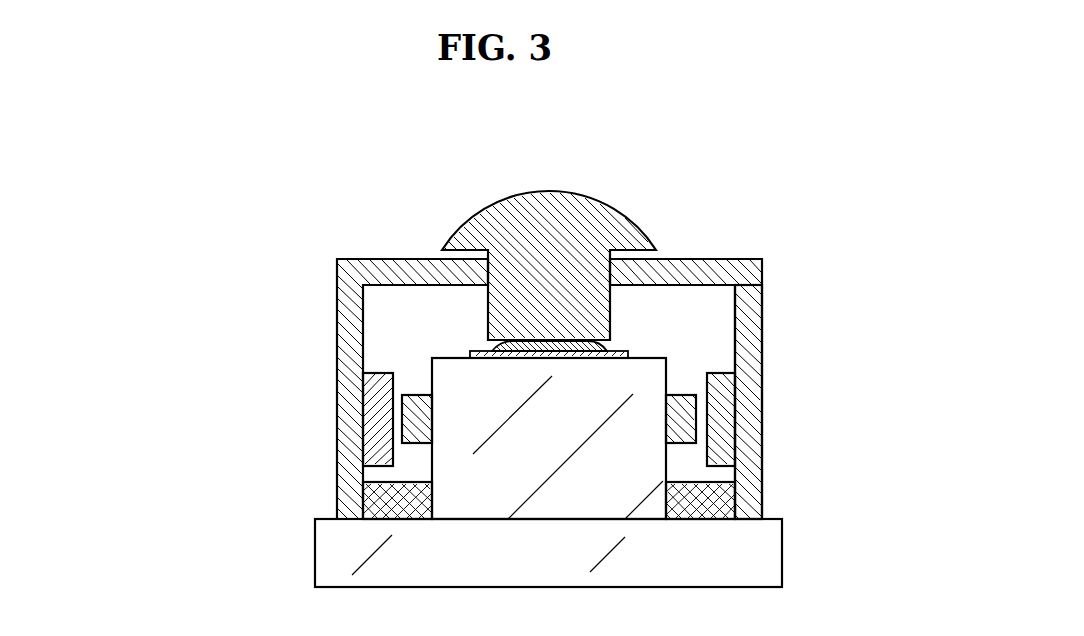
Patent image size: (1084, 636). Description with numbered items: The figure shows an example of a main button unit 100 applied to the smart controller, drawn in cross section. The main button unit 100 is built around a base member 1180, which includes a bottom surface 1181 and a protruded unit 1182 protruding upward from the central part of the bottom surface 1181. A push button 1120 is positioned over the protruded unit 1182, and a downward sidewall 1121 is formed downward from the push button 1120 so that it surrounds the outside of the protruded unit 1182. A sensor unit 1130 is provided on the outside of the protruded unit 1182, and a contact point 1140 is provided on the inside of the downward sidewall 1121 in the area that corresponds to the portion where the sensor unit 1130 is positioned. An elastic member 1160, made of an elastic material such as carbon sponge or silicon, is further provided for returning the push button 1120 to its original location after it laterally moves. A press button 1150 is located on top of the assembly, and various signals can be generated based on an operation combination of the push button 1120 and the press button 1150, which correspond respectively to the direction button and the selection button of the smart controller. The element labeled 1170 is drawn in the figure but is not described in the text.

The main button unit 100 is at (293, 133).
The push button 1120 is at (716, 250).
The downward sidewall 1121 is at (755, 350).
The sensor unit 1130 is at (723, 440).
The contact point 1140 is at (690, 397).
The press button 1150 is at (563, 207).
The elastic member 1160 is at (720, 500).
The light emitting chip / adhesive layer 1170 is at (528, 345).
The base member 1180 is at (192, 447).
The bottom surface 1181 is at (337, 547).
The protruded unit 1182 is at (453, 460).